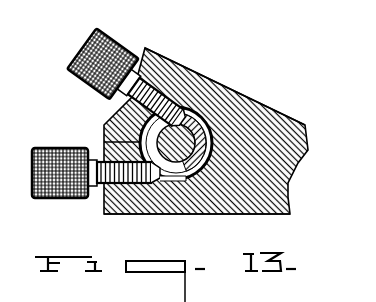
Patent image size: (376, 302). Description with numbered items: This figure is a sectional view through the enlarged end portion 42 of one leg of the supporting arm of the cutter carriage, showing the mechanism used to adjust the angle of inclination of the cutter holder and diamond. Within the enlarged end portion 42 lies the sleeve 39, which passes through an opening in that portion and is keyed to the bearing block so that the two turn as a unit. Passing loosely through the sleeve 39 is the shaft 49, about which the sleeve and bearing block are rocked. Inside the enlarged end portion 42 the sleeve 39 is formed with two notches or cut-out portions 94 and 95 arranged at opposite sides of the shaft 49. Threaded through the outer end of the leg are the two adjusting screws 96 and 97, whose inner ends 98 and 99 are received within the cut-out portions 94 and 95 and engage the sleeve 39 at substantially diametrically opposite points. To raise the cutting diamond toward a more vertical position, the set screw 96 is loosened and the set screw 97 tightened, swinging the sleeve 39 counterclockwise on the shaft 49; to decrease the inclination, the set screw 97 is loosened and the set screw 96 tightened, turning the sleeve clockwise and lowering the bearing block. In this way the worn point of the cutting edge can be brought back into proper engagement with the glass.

The sleeve 39 is at (253, 107).
The enlarged end portion 42 is at (231, 103).
The shaft 49 is at (172, 214).
The cut-out portion 94 is at (189, 72).
The cut-out portion 95 is at (104, 142).
The adjusting screw 96 is at (143, 18).
The adjusting screw 97 is at (43, 207).
The inner end 98 is at (190, 102).
The inner end 99 is at (156, 206).